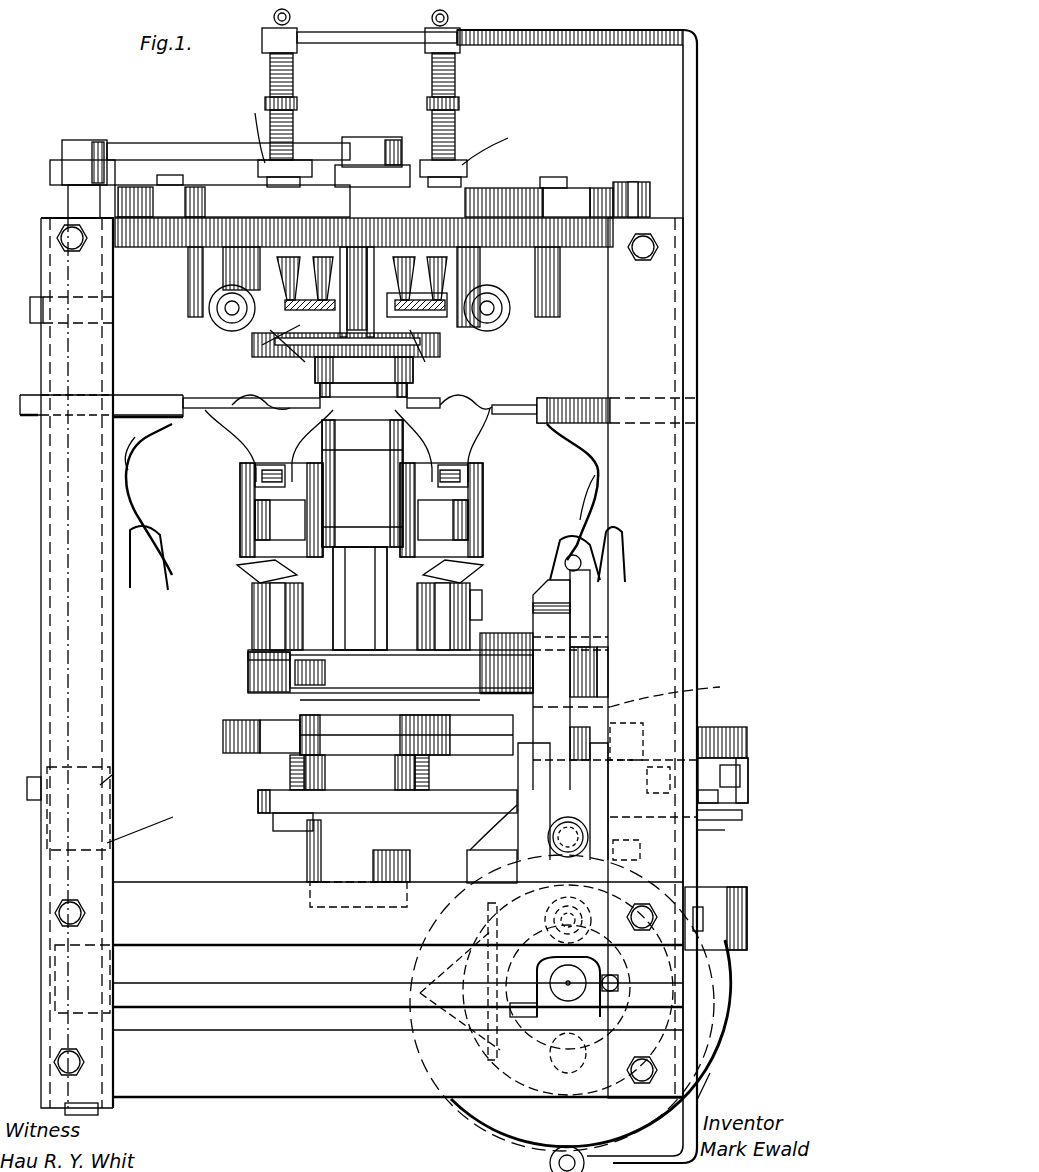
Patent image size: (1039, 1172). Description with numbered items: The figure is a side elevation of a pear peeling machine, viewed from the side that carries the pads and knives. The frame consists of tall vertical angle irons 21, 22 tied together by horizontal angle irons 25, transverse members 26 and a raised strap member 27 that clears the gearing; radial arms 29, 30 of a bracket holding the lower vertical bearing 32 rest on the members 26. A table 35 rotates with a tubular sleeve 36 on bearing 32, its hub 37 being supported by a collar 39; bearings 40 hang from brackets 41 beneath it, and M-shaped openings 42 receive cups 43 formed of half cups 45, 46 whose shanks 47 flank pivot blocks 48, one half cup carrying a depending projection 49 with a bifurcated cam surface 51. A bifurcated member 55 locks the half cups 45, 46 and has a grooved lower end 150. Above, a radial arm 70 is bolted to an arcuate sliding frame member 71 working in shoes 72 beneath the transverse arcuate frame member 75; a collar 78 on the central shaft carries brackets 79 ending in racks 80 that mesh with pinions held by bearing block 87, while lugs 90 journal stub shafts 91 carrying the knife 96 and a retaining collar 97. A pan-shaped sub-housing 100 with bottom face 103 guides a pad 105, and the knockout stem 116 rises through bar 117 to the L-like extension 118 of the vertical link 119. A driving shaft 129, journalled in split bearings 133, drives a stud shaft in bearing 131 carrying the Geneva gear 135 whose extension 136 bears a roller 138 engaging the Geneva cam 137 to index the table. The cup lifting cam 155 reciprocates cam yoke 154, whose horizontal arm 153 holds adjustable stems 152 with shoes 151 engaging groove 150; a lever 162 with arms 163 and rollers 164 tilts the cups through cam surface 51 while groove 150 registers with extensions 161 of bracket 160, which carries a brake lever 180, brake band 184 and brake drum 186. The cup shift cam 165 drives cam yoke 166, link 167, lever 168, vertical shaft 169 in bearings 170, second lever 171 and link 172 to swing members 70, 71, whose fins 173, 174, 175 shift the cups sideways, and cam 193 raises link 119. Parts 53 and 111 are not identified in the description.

The angle iron 21 is at (40, 553).
The angle iron 22 is at (645, 592).
The horizontally disposed angle irons 25 is at (292, 1080).
The transverse members 26 is at (398, 932).
The strap member 27 is at (745, 887).
The radial arm 29 is at (178, 817).
The radial arm 30 is at (448, 880).
The vertical bearing 32 is at (307, 858).
The table 35 is at (155, 395).
The tubular sleeve 36 is at (360, 598).
The hub 37 is at (362, 483).
The collar 39 is at (368, 547).
The bearings 40 is at (252, 615).
The brackets 41 is at (237, 570).
The openings 42 is at (540, 405).
The cups 43 is at (258, 410).
The half cup 45 is at (232, 447).
The half cup 46 is at (135, 440).
The shanks 47 is at (262, 478).
The pivot blocks 48 is at (258, 518).
The depending projection 49 is at (150, 540).
The bifurcated cam surface 51 is at (128, 540).
The nut 53 is at (258, 490).
The bifurcated member 55 is at (290, 770).
The radial arm 70 is at (388, 148).
The arcuate sliding frame member 71 is at (503, 190).
The shoes 72 is at (125, 185).
The transverse arcuate frame member 75 is at (195, 232).
The collar 78 is at (312, 398).
The extending brackets 79 is at (270, 340).
The rack 80 is at (440, 340).
The bearing block 87 is at (390, 260).
The lug 90 is at (243, 247).
The stub shaft 91 is at (228, 312).
The knife 96 is at (417, 304).
The retaining collar 97 is at (232, 320).
The sub-housing 100 is at (290, 257).
The bottom face 103 is at (315, 257).
The pad 105 is at (295, 358).
The adjusting screw 111 is at (385, 131).
The stem 116 is at (293, 137).
The bar 117 is at (361, 38).
The L-like extension 118 is at (580, 26).
The vertical link 119 is at (697, 248).
The driving shaft 129 is at (577, 978).
The bearing 131 is at (712, 1076).
The split bearings 133 is at (465, 1012).
The driving Geneva gear 135 is at (587, 737).
The extension 136 is at (748, 768).
The Geneva cam 137 is at (406, 735).
The roller 138 is at (738, 735).
The grooved lower end 150 is at (290, 680).
The shoes 151 is at (225, 720).
The adjustable stem 152 is at (290, 772).
The horizontal arm 153 is at (262, 800).
The cam yoke 154 is at (523, 795).
The cup lifting cam 155 is at (731, 1017).
The bracket 160 is at (590, 642).
The extensions 161 is at (642, 688).
The lever 162 is at (494, 600).
The arms 163 is at (591, 608).
The roller 164 is at (572, 555).
The cup shift cam 165 is at (566, 849).
The cam yoke 166 is at (440, 1030).
The link 167 is at (330, 990).
The lever 168 is at (113, 970).
The vertical shaft 169 is at (110, 670).
The bearings 170 is at (112, 310).
The second lever 171 is at (92, 142).
The link 172 is at (200, 138).
The fin 173 is at (190, 312).
The fin 174 is at (364, 376).
The fin 175 is at (555, 300).
The brake lever 180 is at (505, 655).
The brake band 184 is at (248, 675).
The brake drum 186 is at (248, 656).
The cam 193 is at (728, 818).